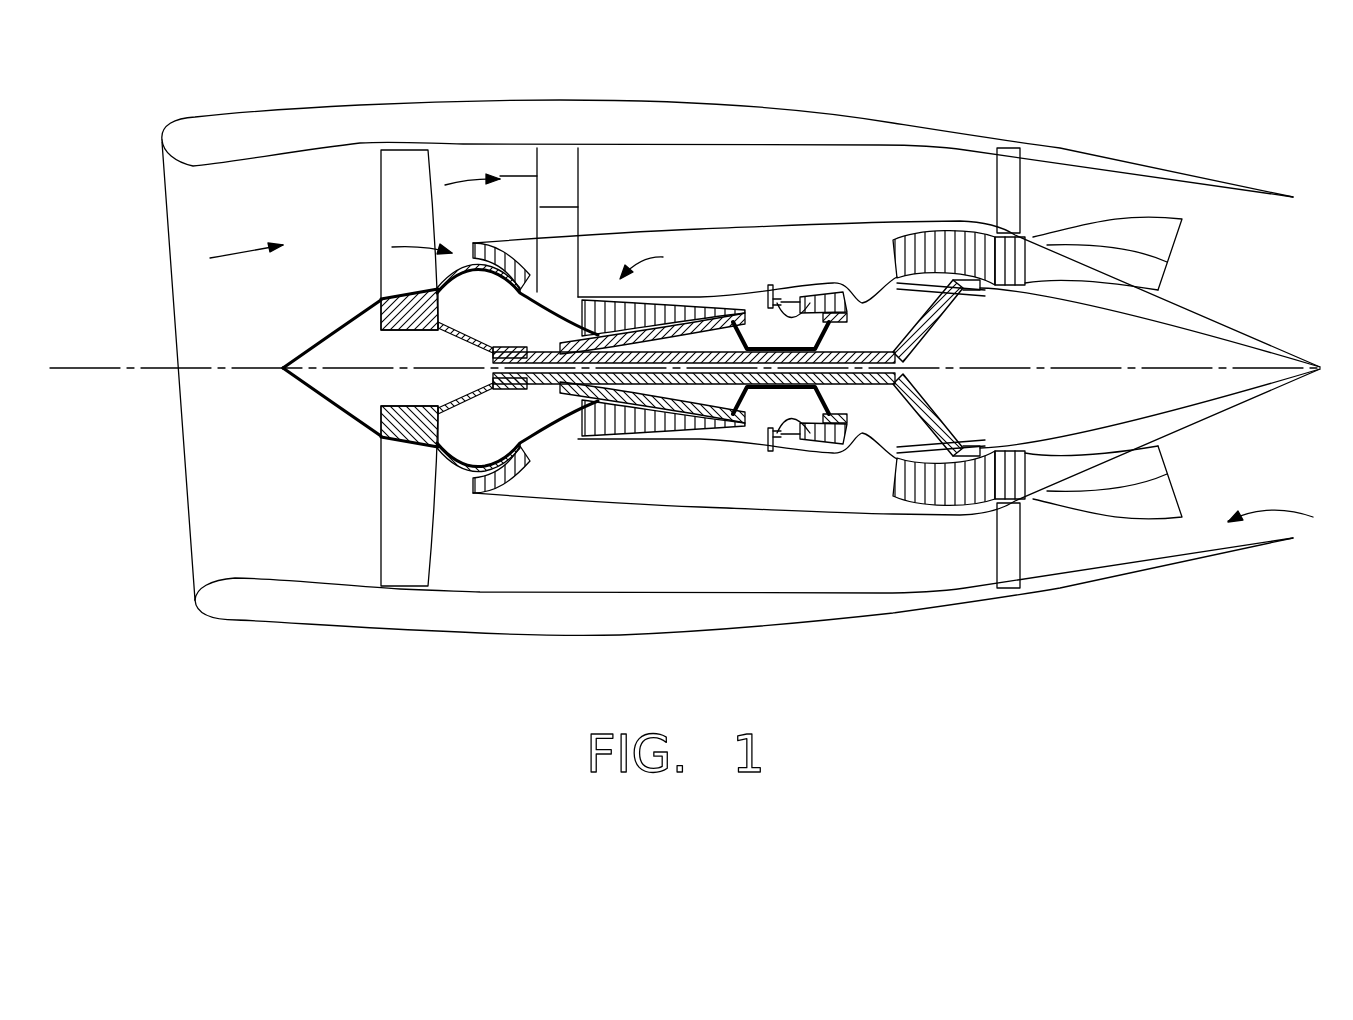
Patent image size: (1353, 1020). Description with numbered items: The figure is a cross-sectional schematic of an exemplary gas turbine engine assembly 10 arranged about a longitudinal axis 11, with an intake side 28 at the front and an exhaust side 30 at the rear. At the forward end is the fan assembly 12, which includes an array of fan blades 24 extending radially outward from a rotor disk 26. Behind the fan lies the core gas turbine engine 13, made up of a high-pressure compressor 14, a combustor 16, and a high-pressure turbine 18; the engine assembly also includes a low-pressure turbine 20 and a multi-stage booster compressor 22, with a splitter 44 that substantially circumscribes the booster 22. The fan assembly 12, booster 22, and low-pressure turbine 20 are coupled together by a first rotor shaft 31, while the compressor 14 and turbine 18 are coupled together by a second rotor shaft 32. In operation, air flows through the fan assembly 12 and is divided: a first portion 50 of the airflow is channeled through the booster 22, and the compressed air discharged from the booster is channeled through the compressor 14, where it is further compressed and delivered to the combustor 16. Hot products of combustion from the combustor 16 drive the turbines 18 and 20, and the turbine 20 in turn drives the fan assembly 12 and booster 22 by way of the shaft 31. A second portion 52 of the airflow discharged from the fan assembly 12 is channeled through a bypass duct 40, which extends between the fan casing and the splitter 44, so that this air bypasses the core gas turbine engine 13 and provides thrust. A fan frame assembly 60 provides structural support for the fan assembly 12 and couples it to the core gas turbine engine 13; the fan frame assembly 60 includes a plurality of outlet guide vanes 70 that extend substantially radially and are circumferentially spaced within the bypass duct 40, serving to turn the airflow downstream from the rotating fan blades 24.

The gas turbine engine assembly 10 is at (953, 620).
The longitudinal axis 11 is at (148, 372).
The fan assembly 12 is at (403, 523).
The core gas turbine engine 13 is at (1043, 505).
The high-pressure compressor 14 is at (658, 259).
The combustor 16 is at (771, 281).
The high-pressure turbine 18 is at (834, 281).
The low-pressure turbine 20 is at (939, 218).
The multi-stage booster compressor 22 is at (528, 238).
The fan blades 24 is at (402, 203).
The rotor disk 26 is at (390, 302).
The intake side 28 is at (238, 250).
The exhaust side 30 is at (1288, 522).
The first rotor shaft 31 is at (724, 390).
The second rotor shaft 32 is at (805, 390).
The bypass duct 40 is at (518, 219).
The splitter 44 is at (507, 493).
The first portion of the airflow 50 is at (403, 243).
The second portion of the airflow 52 is at (447, 182).
The fan frame assembly 60 is at (630, 608).
The outlet guide vanes 70 is at (559, 222).